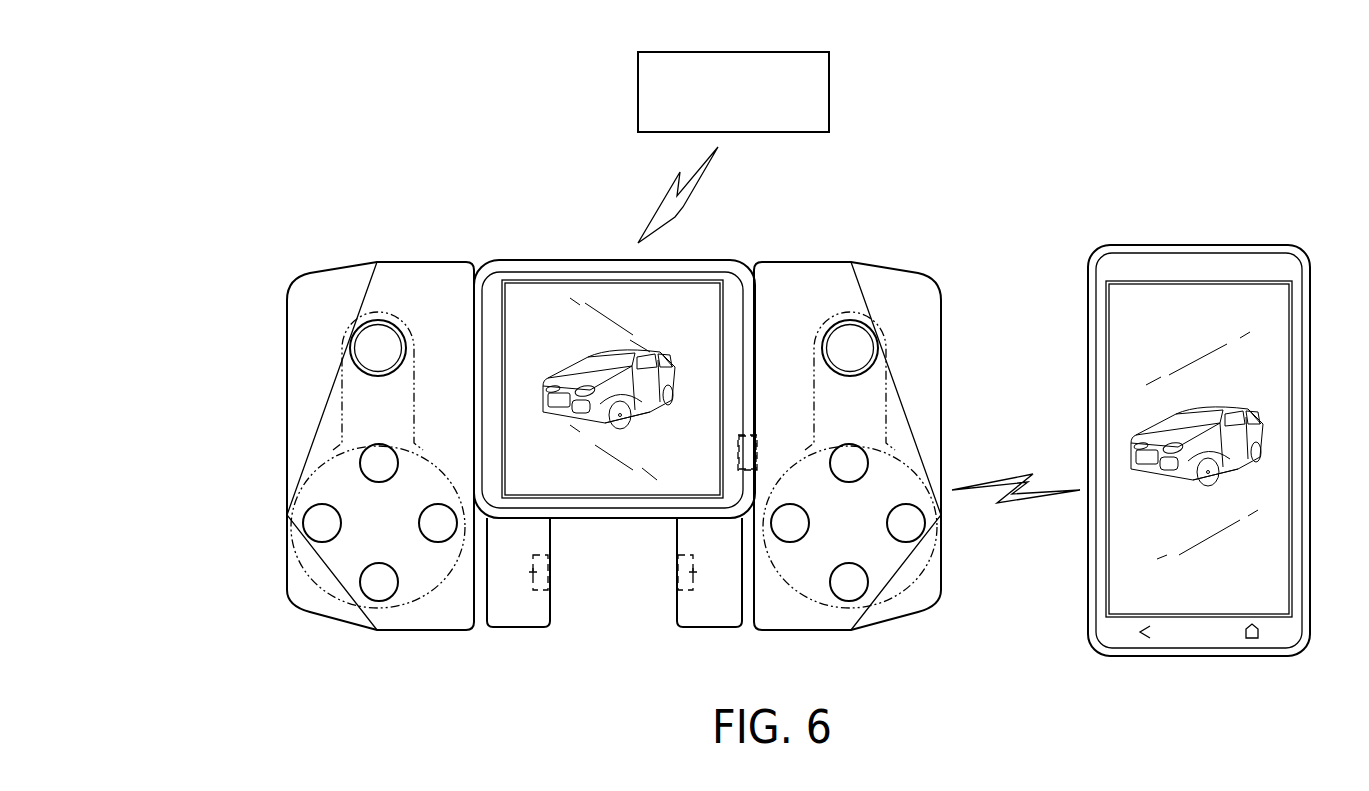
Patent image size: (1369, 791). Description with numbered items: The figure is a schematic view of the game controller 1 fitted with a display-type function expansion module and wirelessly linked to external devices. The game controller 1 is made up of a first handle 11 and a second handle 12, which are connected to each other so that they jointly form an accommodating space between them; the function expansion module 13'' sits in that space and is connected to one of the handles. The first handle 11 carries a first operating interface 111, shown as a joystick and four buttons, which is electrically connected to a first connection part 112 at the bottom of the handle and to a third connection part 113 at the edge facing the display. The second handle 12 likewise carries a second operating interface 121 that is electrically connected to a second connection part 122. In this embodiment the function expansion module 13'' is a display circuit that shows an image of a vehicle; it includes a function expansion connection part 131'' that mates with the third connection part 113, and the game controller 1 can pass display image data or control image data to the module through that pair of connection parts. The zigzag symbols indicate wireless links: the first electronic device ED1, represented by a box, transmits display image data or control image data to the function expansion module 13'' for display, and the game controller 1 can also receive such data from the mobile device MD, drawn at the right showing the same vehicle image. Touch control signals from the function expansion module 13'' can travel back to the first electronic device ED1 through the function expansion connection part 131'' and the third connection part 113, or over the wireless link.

The game controller 1 is at (376, 232).
The first handle 11 is at (905, 295).
The second handle 12 is at (322, 297).
The function expansion module 13'' is at (615, 403).
The first operating interface 111 is at (885, 398).
The first connection part 112 is at (693, 572).
The third connection part 113 is at (757, 453).
The second operating interface 121 is at (345, 400).
The second connection part 122 is at (533, 572).
The function expansion connection part 131'' is at (683, 508).
The first electronic device ED1 is at (829, 88).
The mobile device MD is at (1198, 245).